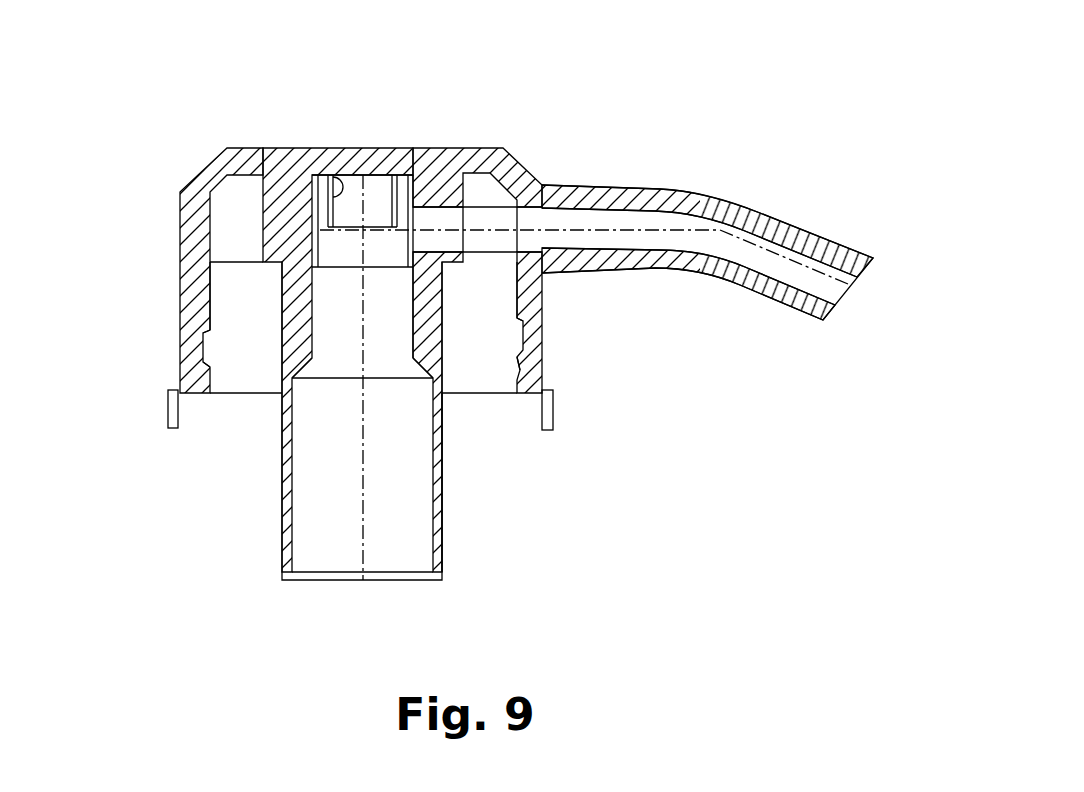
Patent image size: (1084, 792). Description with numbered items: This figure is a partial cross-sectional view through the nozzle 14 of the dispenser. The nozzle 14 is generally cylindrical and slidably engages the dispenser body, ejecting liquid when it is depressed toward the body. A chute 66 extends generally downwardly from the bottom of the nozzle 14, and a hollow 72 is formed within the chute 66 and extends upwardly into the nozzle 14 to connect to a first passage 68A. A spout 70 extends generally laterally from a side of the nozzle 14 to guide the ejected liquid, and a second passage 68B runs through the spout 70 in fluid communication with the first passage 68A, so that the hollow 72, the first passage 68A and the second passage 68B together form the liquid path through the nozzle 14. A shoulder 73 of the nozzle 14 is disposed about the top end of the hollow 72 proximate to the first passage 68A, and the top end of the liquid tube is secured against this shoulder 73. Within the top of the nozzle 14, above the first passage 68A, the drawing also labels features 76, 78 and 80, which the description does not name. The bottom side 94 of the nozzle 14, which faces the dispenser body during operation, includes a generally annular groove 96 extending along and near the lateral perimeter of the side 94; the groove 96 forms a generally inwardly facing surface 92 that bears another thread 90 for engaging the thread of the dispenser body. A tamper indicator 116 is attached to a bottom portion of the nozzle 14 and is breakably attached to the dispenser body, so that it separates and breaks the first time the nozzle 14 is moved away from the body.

The nozzle 14 is at (443, 150).
The chute 66 is at (442, 535).
The first passage 68A is at (348, 340).
The second passage 68B is at (623, 218).
The spout 70 is at (711, 197).
The hollow 72 is at (306, 507).
The shoulder 73 is at (308, 378).
The valve member 76 is at (337, 172).
The valve seat 78 is at (320, 172).
The ball 80 is at (397, 172).
The thread 90 is at (207, 372).
The inwardly facing surface 92 is at (205, 335).
The bottom side 94 is at (255, 418).
The annular groove 96 is at (224, 314).
The tamper indicator 116 is at (168, 405).